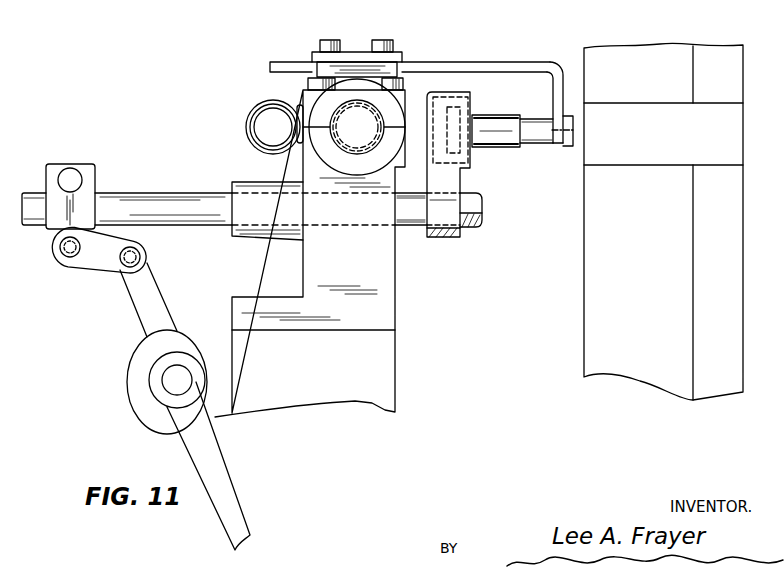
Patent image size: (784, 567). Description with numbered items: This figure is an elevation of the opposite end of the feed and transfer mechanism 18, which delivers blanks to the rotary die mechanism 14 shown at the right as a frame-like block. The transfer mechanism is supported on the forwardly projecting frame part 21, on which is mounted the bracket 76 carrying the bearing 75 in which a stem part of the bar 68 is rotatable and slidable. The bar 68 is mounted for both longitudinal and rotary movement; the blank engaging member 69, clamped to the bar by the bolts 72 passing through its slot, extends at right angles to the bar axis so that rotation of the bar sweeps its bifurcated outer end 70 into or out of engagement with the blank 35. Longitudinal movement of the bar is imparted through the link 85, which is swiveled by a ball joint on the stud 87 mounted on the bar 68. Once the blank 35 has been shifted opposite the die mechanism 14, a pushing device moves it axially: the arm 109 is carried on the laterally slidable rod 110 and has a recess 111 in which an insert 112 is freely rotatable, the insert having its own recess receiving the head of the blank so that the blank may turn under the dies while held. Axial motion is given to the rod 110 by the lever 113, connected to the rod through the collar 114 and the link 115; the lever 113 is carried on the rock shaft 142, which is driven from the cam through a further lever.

The rotary die mechanism 14 is at (582, 246).
The feed and transfer mechanism 18 is at (437, 61).
The forwardly projecting frame part 21 is at (388, 342).
The blank 35 is at (560, 150).
The bar 68 is at (343, 117).
The blank engaging member 69 is at (533, 63).
The bifurcated outer end 70 is at (555, 138).
The clamping screws or bolts 72 is at (350, 40).
The bearing 75 is at (403, 88).
The bracket 76 is at (310, 270).
The link 85 is at (255, 108).
The stud 87 is at (300, 110).
The arm 109 is at (455, 183).
The laterally slidable rod 110 is at (417, 218).
The recess 111 is at (442, 108).
The insert 112 is at (480, 108).
The lever 113 is at (143, 303).
The collar 114 is at (53, 218).
The link 115 is at (92, 259).
The rock shaft 142 is at (190, 385).